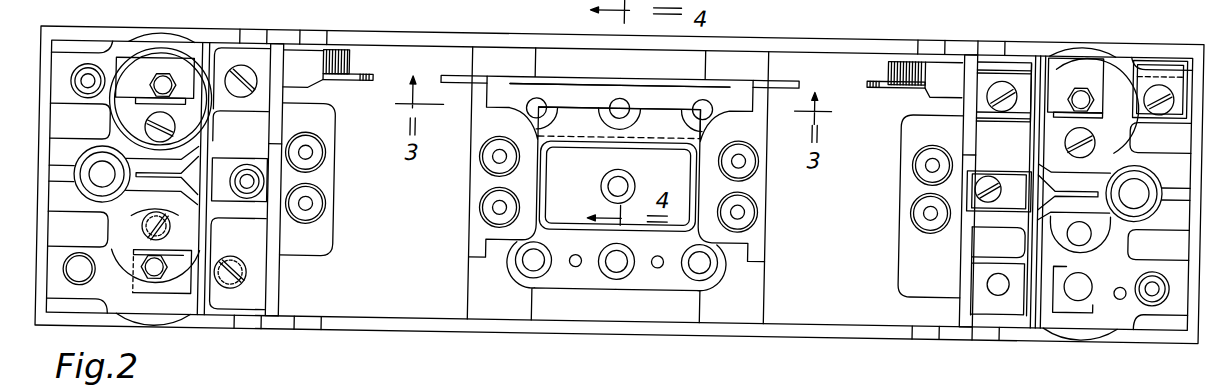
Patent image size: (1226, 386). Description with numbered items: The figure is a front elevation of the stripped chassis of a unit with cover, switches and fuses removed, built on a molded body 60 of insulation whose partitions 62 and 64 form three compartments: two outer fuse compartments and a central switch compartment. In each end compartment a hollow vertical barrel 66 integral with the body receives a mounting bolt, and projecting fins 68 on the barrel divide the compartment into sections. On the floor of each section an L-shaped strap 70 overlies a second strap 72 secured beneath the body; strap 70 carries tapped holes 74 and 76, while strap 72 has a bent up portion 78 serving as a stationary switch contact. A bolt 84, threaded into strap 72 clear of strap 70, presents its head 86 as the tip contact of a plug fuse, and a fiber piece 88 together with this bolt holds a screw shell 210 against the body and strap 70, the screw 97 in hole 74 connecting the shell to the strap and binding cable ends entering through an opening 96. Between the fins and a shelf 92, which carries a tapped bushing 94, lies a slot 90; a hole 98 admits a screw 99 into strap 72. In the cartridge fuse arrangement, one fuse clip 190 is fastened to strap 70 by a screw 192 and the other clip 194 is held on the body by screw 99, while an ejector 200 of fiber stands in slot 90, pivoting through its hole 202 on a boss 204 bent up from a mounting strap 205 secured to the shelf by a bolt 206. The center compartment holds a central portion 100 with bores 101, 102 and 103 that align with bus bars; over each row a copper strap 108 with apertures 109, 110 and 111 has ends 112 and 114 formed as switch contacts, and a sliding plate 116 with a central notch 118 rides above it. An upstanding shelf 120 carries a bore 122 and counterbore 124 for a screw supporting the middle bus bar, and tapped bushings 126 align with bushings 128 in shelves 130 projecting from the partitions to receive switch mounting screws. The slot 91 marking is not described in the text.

The molded body 60 is at (457, 0).
The partition 62 is at (368, 181).
The partition 64 is at (924, 259).
The hollow vertical barrel 66 is at (1090, 178).
The projecting fins 68 is at (1052, 168).
The L-shaped strap 70 is at (614, 204).
The second strap 72 is at (623, 73).
The tapped hole 74 is at (161, 228).
The tapped hole 76 is at (46, 247).
The bent up portion 78 is at (623, 96).
The bolt 84 is at (115, 52).
The head 86 is at (617, 183).
The fiber piece 88 is at (608, 180).
The slot 90 is at (628, 204).
The slot 91 is at (107, 201).
The shelf 92 is at (587, 164).
The tapped bushing 94 is at (215, 158).
The opening 96 is at (620, 183).
The screw 97 is at (131, 105).
The hole 98 is at (974, 241).
The screw 99 is at (211, 59).
The central portion 100 is at (447, 265).
The bore 101 is at (501, 236).
The bore 102 is at (580, 238).
The bore 103 is at (662, 237).
The copper strap 108 is at (629, 96).
The aperture 109 is at (561, 97).
The aperture 110 is at (584, 63).
The aperture 111 is at (668, 57).
The strap end 112 is at (463, 98).
The strap end 114 is at (778, 109).
The plate 116 is at (619, 123).
The central notch 118 is at (619, 129).
The upstanding shelf 120 is at (618, 186).
The bore 122 is at (570, 152).
The counterbore 124 is at (566, 145).
The holes and tapped bushings 126 is at (443, 180).
The holes and bushings 128 is at (268, 173).
The shelf 130 is at (621, 200).
The fuse clip 190 is at (1135, 44).
The screw 192 is at (1108, 45).
The fuse clip 194 is at (998, 72).
The ejector 200 is at (999, 263).
The hole 202 is at (999, 242).
The boss 204 is at (991, 125).
The mounting strap 205 is at (981, 161).
The bolt 206 is at (992, 180).
The screw shell 210 is at (141, 24).